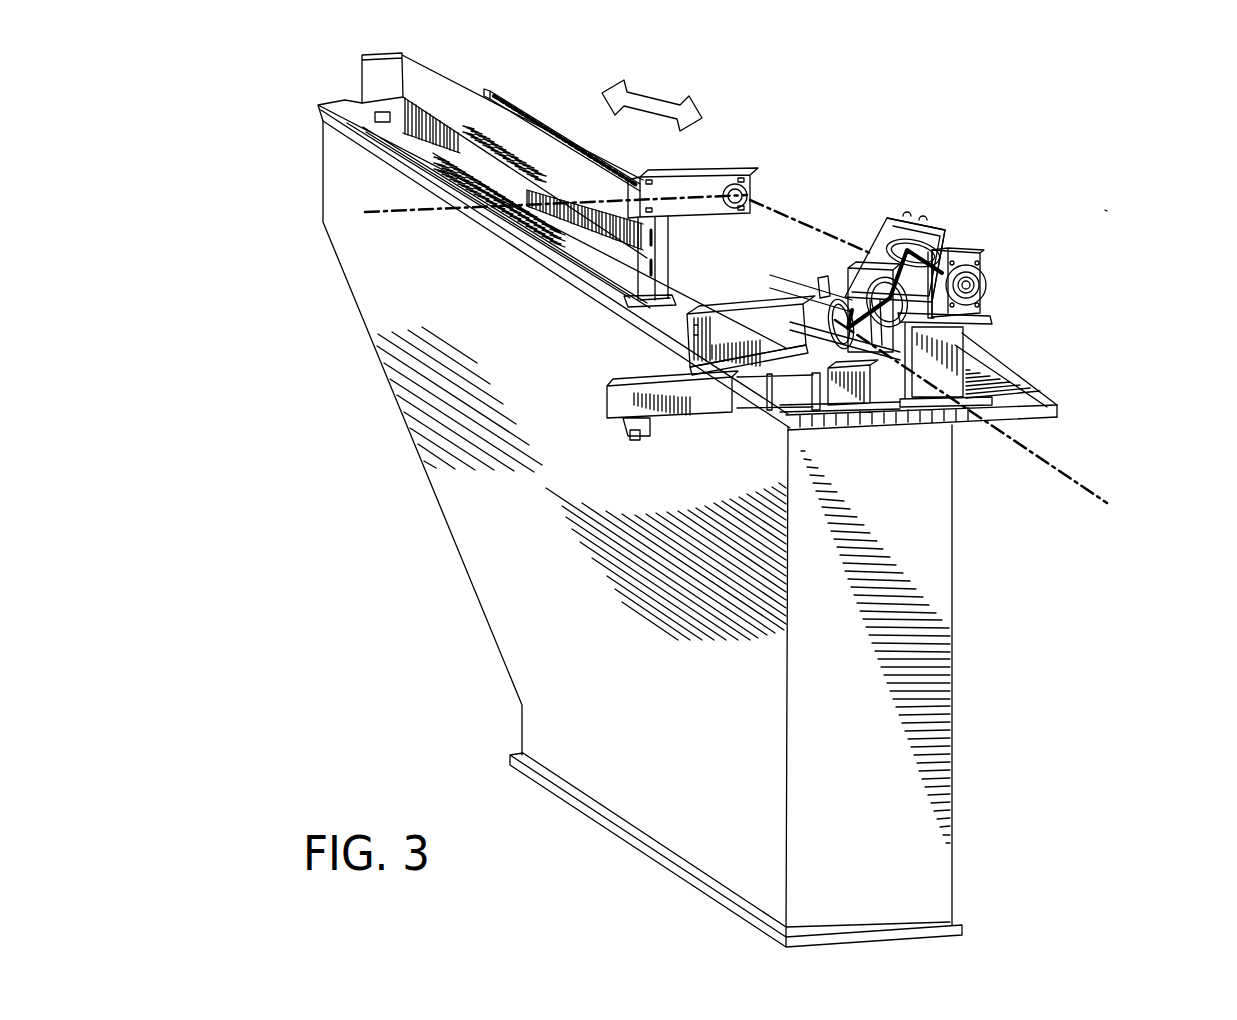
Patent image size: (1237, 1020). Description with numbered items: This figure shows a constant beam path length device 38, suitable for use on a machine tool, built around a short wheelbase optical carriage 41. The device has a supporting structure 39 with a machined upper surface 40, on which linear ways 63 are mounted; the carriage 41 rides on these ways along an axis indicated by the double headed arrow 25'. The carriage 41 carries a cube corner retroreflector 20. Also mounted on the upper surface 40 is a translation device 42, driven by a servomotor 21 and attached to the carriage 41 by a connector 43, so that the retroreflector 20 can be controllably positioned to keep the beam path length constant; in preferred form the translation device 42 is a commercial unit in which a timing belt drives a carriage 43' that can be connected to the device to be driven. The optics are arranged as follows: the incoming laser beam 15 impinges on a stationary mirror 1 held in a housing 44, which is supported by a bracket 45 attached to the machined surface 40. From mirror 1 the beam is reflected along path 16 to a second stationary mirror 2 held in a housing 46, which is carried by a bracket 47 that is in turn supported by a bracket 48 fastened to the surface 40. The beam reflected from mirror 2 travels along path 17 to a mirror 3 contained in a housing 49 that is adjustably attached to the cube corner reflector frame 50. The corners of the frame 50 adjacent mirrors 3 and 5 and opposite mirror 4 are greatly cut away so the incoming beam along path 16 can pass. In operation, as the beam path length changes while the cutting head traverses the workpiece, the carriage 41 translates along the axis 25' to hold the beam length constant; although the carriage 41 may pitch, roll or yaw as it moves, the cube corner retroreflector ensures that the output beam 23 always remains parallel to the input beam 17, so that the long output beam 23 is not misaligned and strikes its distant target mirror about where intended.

The stationary mirror 1 is at (722, 187).
The stationary mirror 2 is at (982, 285).
The mirror 3 is at (910, 240).
The mirror 4 is at (878, 285).
The mirror 5 is at (834, 300).
The laser beam 15 is at (433, 215).
The path 16 is at (820, 280).
The path 17 is at (922, 246).
The cube corner retroreflector 20 is at (893, 210).
The servomotor 21 is at (690, 398).
The output beam 23 is at (1040, 453).
The double headed arrow 25' is at (670, 93).
The constant beam path length device 38 is at (1107, 210).
The supporting structure 39 is at (902, 524).
The machined upper surface 40 is at (1018, 397).
The short wheelbase optical carriage 41 is at (888, 360).
The translation device 42 is at (400, 80).
The connector 43 is at (689, 331).
The carriage 43' is at (708, 360).
The housing 44 is at (748, 165).
The bracket 45 is at (640, 278).
The housing 46 is at (998, 264).
The bracket 47 is at (984, 272).
The bracket 48 is at (957, 337).
The housing 49 is at (915, 180).
The cube corner reflector frame 50 is at (850, 270).
The linear ways 63 is at (500, 95).